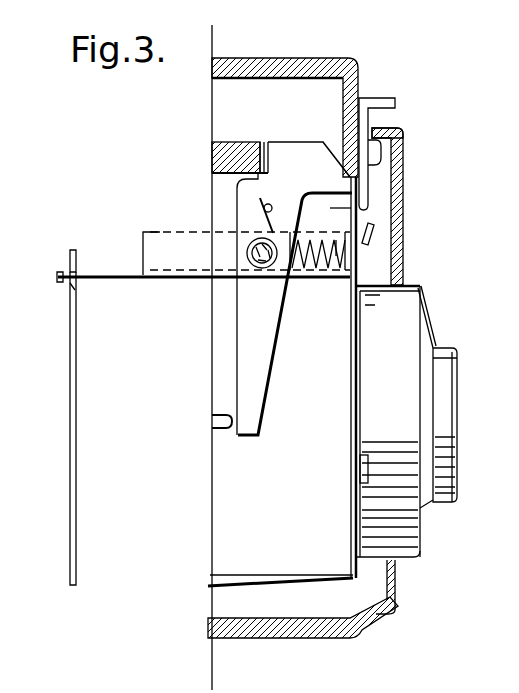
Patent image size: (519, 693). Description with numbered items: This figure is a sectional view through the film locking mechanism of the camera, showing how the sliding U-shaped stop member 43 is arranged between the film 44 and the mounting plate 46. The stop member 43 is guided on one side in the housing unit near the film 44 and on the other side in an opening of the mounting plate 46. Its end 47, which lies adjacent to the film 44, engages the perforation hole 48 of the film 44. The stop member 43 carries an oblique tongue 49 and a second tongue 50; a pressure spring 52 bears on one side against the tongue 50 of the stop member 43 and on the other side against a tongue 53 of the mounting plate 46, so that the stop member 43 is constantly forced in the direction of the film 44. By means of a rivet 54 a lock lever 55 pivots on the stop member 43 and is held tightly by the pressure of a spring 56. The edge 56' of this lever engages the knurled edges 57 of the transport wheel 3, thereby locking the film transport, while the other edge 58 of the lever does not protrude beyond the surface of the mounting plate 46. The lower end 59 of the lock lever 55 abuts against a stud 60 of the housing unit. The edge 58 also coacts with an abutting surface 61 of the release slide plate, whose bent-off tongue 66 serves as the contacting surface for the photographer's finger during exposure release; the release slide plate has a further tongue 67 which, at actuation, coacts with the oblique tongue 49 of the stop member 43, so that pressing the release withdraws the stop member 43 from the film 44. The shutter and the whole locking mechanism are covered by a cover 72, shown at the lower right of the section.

The transport wheel 3 is at (238, 162).
The stop member 43 is at (157, 248).
The film 44 is at (70, 363).
The mounting plate 46 is at (356, 386).
The end of the stop member 47 is at (58, 277).
The perforation hole 48 is at (45, 289).
The oblique tongue 49 is at (368, 228).
The second tongue 50 is at (228, 246).
The pressure spring 52 is at (322, 270).
The tongue of mounting plate 53 is at (338, 249).
The rivet 54 is at (248, 260).
The lock lever 55 is at (253, 335).
The spring 56 is at (221, 205).
The edge of the stop lever 56' is at (309, 141).
The knurled edges 57 is at (262, 143).
The edge of the stop lever 58 is at (332, 146).
The lower end of the lock lever 59 is at (246, 432).
The stud 60 is at (222, 419).
The abutting surface 61 is at (372, 149).
The bent-off tongue 66 is at (366, 100).
The tongue 67 is at (366, 193).
The cover 72 is at (397, 600).